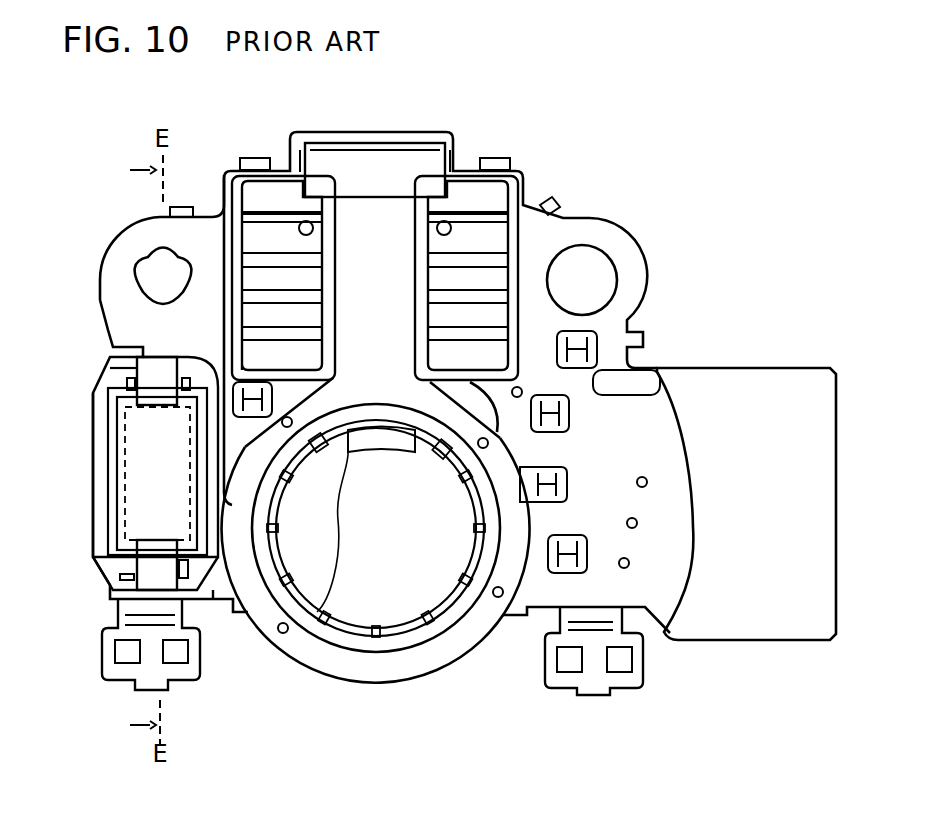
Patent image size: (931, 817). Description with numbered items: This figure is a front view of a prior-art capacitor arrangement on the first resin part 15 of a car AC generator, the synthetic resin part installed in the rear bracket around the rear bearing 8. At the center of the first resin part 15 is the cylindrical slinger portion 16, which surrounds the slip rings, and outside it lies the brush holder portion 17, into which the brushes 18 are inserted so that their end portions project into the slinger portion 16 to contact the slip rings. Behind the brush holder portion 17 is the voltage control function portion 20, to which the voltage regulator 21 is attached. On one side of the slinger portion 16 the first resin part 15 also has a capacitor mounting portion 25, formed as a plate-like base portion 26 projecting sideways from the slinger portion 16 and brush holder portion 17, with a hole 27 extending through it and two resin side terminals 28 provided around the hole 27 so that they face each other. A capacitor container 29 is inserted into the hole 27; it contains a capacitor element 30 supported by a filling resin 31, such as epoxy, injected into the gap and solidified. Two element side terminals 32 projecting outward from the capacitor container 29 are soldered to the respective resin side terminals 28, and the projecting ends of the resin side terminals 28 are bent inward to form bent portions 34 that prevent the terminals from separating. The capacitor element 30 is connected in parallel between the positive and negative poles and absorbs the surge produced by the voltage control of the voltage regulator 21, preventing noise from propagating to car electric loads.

The rear bearing 8 is at (108, 682).
The first resin part 15 is at (120, 213).
The slinger portion 16 is at (345, 660).
The brush holder portion 17 is at (341, 160).
The brushes 18 is at (317, 612).
The voltage control function portion 20 is at (525, 182).
The voltage regulator 21 is at (254, 190).
The capacitor mounting portion 25 is at (120, 352).
The base portion 26 is at (217, 592).
The hole 27 is at (110, 483).
The resin side terminals 28 is at (125, 363).
The capacitor container 29 is at (110, 430).
The capacitor element 30 is at (82, 515).
The filling resin 31 is at (123, 503).
The element side terminals 32 is at (162, 363).
The bent portions 34 is at (127, 383).